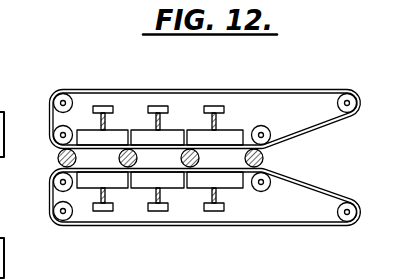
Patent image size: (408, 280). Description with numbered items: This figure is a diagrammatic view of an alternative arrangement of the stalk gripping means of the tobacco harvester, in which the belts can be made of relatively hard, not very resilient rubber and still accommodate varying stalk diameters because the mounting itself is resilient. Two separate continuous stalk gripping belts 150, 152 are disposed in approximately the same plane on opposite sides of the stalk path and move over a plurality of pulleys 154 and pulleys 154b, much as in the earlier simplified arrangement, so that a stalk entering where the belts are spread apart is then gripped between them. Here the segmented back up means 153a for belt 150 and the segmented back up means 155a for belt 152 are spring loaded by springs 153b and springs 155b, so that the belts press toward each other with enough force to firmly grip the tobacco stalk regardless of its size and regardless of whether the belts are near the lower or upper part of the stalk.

The stalk gripping belt 150 is at (322, 185).
The stalk gripping belt 152 is at (360, 100).
The pulley 154 is at (341, 98).
The pulley 154b is at (56, 96).
The segmented back up means 155a is at (116, 133).
The spring 155b is at (104, 106).
The segmented back up means 153a is at (118, 181).
The spring 153b is at (97, 203).